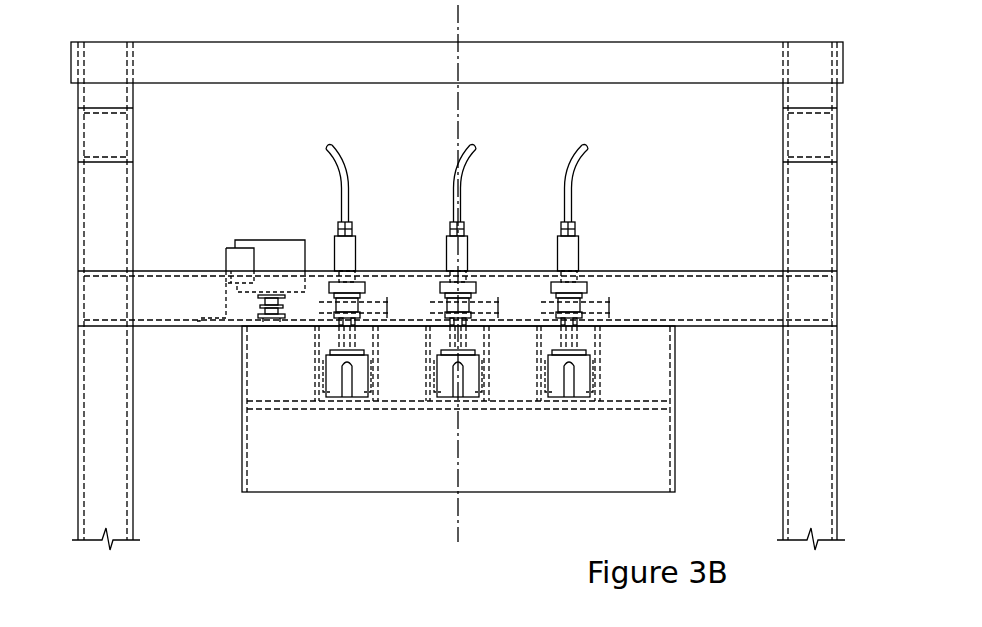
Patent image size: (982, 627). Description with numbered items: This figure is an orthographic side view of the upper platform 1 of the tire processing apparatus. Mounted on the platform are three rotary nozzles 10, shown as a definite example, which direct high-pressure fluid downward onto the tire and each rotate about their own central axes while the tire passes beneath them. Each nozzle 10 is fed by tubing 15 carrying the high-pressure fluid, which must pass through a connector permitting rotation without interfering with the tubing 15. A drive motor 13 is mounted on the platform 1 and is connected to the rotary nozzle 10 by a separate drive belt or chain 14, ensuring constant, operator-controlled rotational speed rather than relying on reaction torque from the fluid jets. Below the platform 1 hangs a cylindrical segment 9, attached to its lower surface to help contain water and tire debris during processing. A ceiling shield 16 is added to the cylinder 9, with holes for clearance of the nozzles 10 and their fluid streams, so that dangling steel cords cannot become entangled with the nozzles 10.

The upper platform 1 is at (743, 285).
The cylindrical segment 9 is at (239, 468).
The rotary nozzle 10 is at (337, 385).
The drive motor 13 is at (272, 240).
The drive belt or chain 14 is at (303, 307).
The tubing 15 is at (333, 155).
The ceiling shield 16 is at (640, 405).